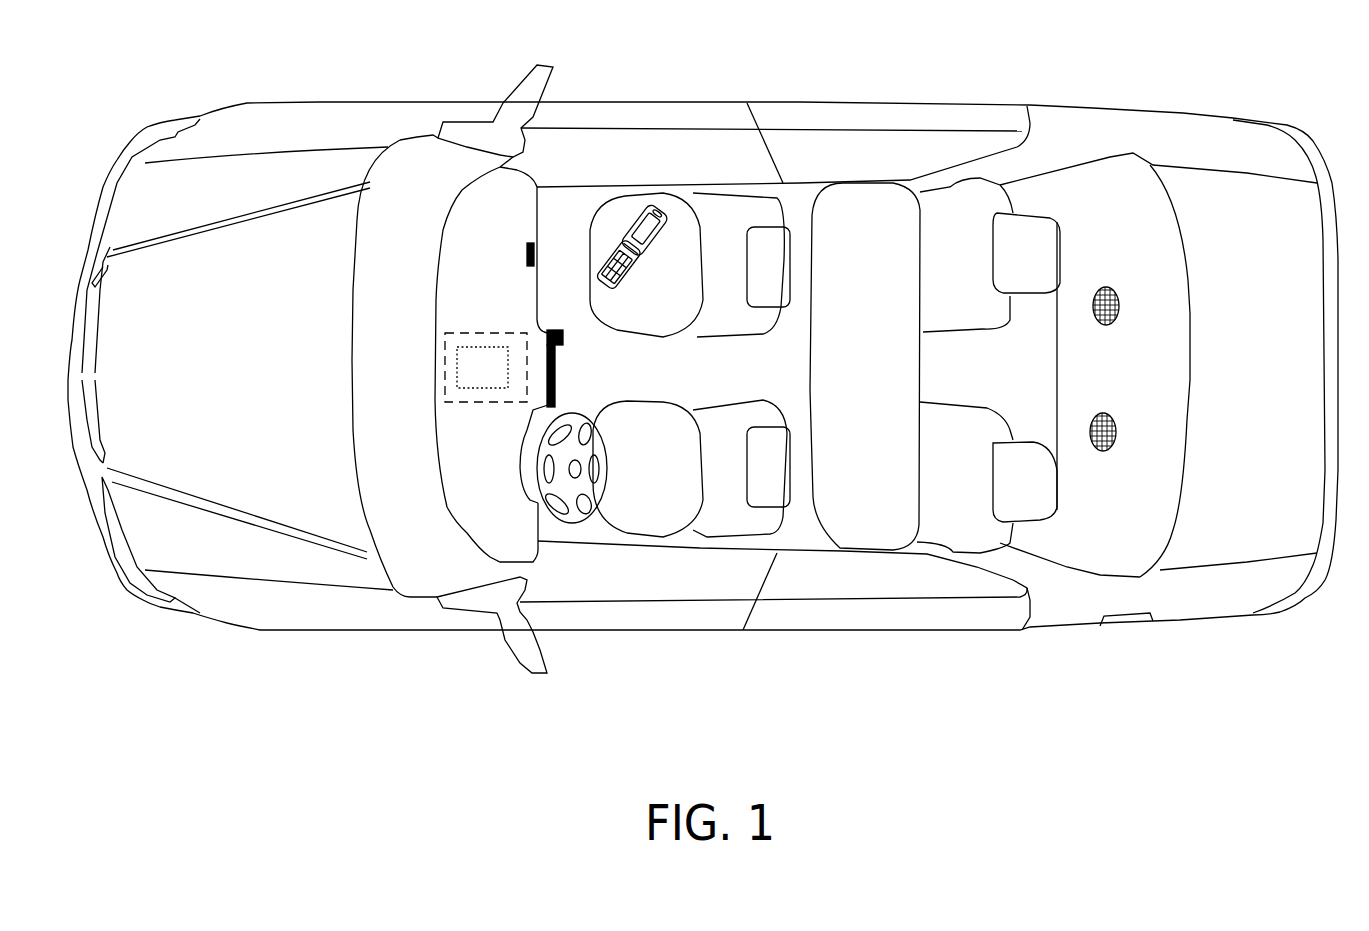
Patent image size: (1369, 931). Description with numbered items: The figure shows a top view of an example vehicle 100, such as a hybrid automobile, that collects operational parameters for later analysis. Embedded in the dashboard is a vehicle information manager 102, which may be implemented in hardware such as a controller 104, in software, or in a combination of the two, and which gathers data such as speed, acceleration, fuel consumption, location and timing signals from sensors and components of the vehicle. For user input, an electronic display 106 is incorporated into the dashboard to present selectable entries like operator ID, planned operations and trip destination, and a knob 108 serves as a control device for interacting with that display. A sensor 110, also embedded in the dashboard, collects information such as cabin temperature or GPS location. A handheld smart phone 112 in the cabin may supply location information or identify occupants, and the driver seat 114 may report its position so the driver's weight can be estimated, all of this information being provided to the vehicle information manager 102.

The vehicle 100 is at (1098, 106).
The vehicle information manager 102 is at (500, 381).
The controller 104 is at (476, 332).
The electronic display 106 is at (557, 368).
The knob 108 is at (560, 332).
The sensor 110 is at (527, 260).
The smart phone 112 is at (648, 262).
The driver seat 114 is at (707, 400).